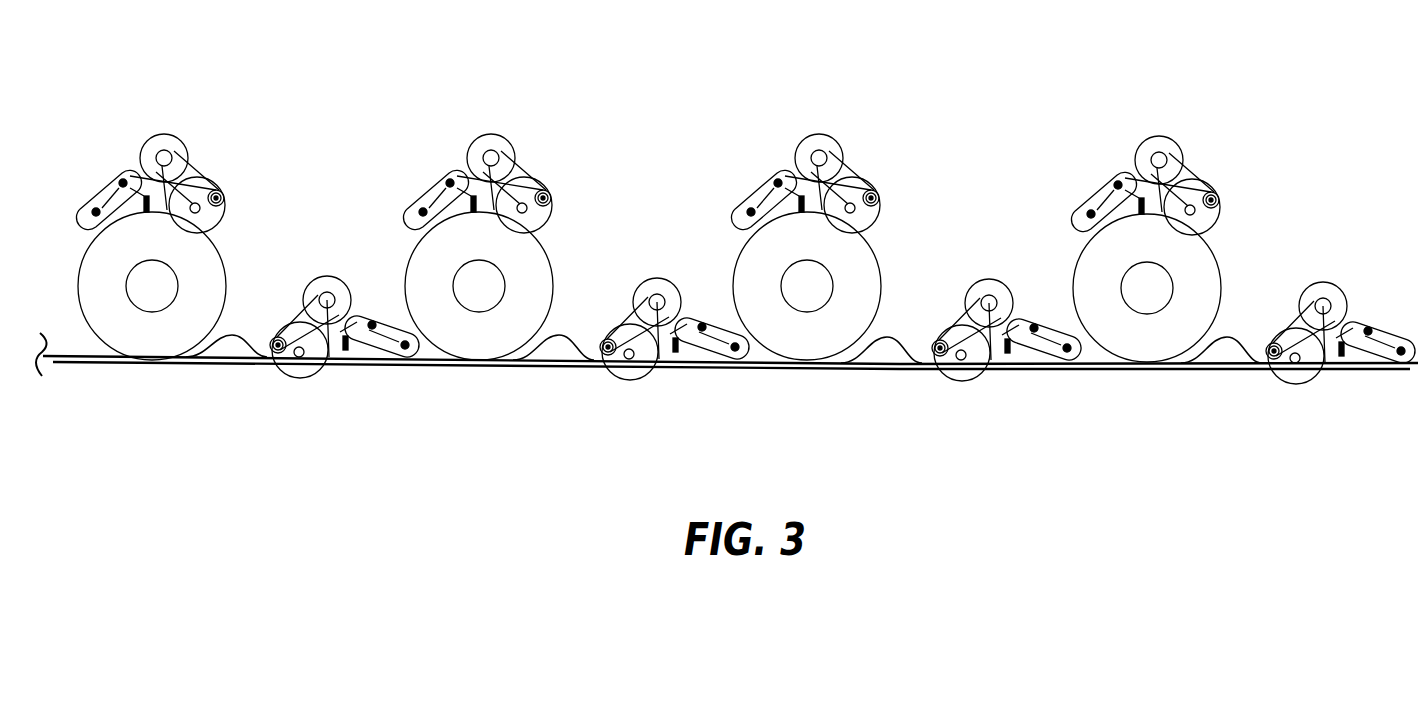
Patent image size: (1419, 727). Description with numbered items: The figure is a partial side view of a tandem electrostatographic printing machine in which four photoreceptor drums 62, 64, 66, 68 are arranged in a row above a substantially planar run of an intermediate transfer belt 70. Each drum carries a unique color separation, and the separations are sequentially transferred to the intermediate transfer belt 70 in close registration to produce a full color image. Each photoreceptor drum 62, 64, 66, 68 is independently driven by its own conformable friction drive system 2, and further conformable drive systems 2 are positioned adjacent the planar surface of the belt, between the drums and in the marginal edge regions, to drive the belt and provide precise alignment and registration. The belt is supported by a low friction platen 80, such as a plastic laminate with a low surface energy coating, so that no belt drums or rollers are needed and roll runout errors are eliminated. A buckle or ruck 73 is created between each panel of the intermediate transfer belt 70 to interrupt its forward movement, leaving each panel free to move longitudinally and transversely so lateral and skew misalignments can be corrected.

The conformable drive system 2 is at (163, 119).
The photoreceptor drum 62 is at (75, 287).
The photoreceptor drum 64 is at (403, 285).
The photoreceptor drum 66 is at (730, 287).
The photoreceptor drum 68 is at (1072, 289).
The low friction platen 80 is at (882, 368).
The intermediate transfer belt 70 is at (1099, 368).
The buckle or ruck 73 is at (1230, 368).